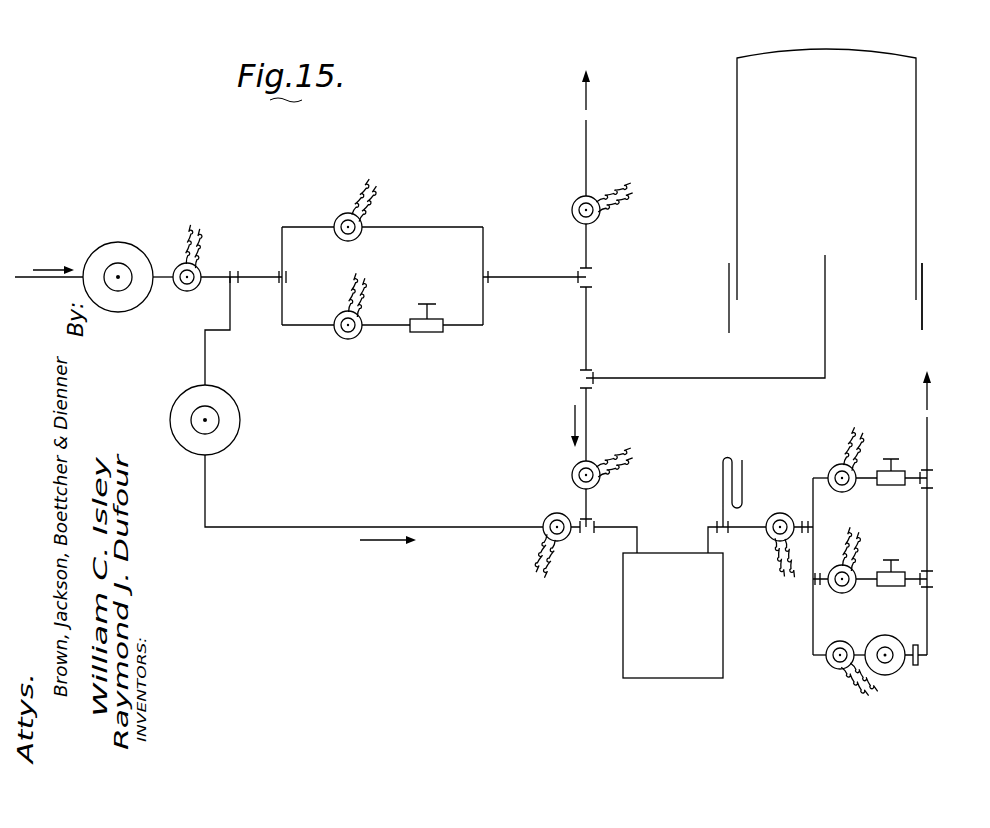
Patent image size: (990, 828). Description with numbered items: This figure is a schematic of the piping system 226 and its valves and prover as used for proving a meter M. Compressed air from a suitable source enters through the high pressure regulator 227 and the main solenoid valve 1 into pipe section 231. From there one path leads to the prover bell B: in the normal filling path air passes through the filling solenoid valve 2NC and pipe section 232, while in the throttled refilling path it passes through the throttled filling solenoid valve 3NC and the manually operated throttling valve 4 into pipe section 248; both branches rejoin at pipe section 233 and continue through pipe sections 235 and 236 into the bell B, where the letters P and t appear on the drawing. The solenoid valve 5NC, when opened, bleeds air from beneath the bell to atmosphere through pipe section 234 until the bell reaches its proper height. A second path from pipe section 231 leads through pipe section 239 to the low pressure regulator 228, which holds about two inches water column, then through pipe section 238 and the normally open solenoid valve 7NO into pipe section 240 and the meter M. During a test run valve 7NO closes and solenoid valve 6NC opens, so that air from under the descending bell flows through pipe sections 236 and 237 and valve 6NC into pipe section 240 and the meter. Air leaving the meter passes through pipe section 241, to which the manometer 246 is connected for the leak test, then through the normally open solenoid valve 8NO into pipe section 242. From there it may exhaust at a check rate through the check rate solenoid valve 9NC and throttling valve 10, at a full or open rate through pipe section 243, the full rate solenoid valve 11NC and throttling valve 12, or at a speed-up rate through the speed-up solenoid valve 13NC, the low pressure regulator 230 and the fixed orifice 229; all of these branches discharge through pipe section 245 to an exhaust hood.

The high pressure regulator 227 is at (122, 248).
The main solenoid valve 1 is at (182, 288).
The pipe section 231 is at (246, 272).
The pipe section 239 is at (205, 357).
The low pressure regulator 228 is at (240, 420).
The piping system 226 is at (291, 530).
The pipe section 238 is at (330, 533).
The pipe section 232 is at (414, 226).
The pipe section 248 is at (310, 335).
The filling solenoid valve 2NC is at (340, 216).
The throttled filling solenoid valve 3NC is at (356, 338).
The manually operated throttling valve 4 is at (442, 336).
The pipe section 233 is at (534, 280).
The solenoid valve 5NC is at (572, 205).
The pipe section 234 is at (590, 241).
The pipe section 235 is at (590, 323).
The pipe section 236 is at (727, 378).
The pipe section 237 is at (590, 405).
The solenoid valve 6NC is at (572, 475).
The solenoid valve 7NO is at (545, 518).
The pipe section 240 is at (608, 532).
The meter M is at (690, 628).
The pipe section 241 is at (731, 532).
The manometer 246 is at (725, 455).
The solenoid valve 8NO is at (778, 514).
The pipe section 242 is at (812, 623).
The check rate solenoid valve 9NC is at (833, 468).
The manually operated throttling valve 10 is at (878, 470).
The pipe section 243 is at (820, 588).
The full rate solenoid valve 11NC is at (842, 594).
The manually operated throttling valve 12 is at (906, 590).
The pipe section 245 is at (932, 515).
The speed-up solenoid valve 13NC is at (832, 668).
The low pressure regulator 230 is at (882, 678).
The fixed orifice 229 is at (922, 665).
The prover bell B is at (793, 60).
The product P is at (836, 216).
The tube t is at (925, 302).